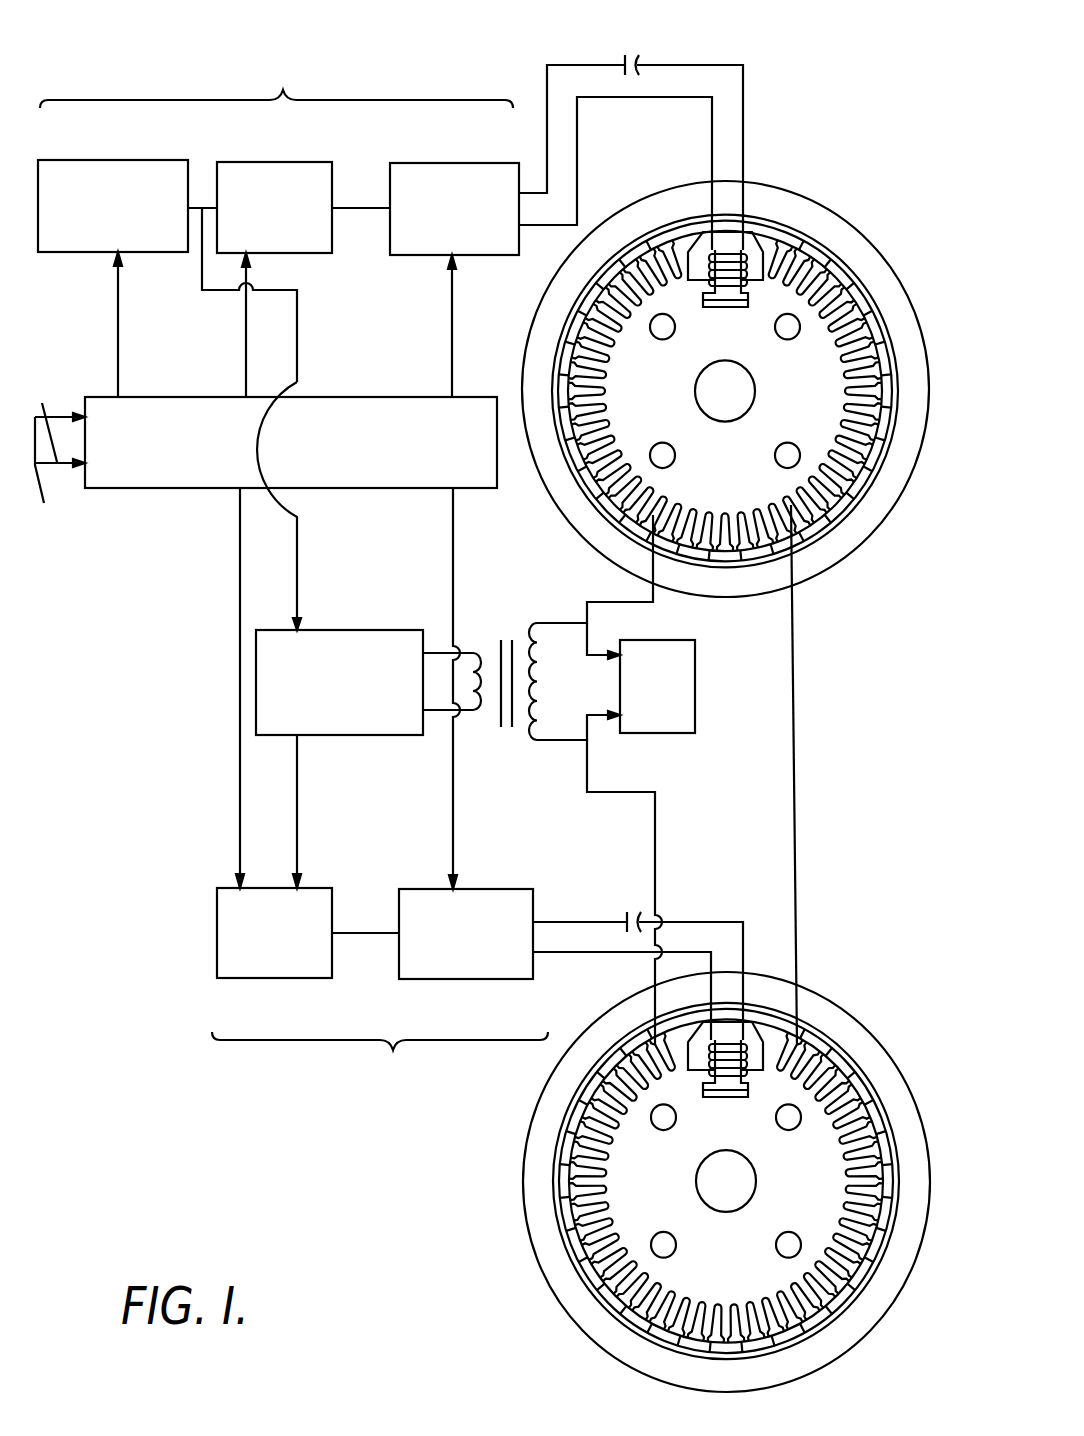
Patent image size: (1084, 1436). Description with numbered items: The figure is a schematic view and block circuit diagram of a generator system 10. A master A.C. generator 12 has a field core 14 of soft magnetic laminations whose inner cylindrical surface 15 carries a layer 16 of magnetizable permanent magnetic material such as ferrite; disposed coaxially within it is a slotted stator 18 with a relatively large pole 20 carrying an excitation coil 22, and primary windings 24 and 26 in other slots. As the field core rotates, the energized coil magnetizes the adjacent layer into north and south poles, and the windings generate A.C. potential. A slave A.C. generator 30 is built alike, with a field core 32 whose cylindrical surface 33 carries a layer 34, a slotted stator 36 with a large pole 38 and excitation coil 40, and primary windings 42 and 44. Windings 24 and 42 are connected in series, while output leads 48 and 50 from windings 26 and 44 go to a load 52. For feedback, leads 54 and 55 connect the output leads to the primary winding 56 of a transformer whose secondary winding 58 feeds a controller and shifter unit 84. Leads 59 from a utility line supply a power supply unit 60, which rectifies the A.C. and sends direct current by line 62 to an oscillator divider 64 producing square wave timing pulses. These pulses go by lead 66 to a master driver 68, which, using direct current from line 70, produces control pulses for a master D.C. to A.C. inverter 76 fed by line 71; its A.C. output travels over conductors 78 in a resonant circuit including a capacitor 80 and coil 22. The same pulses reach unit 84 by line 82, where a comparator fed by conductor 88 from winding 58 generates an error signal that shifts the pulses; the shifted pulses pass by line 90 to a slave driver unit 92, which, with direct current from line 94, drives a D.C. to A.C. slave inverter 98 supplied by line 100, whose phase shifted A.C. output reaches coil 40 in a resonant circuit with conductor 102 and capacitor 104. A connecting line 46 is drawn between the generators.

The generator system 10 is at (838, 781).
The master A.C. generator 12 is at (802, 195).
The field core 14 is at (850, 520).
The inner cylindrical surface 15 is at (830, 513).
The layer of magnetizable permanent magnetic material 16 is at (810, 530).
The stator 18 is at (680, 248).
The pole 20 is at (723, 300).
The excitation coil 22 is at (740, 257).
The primary winding 24 is at (877, 447).
The primary winding 26 is at (600, 470).
The slave A.C. generator 30 is at (523, 1160).
The field core 32 is at (812, 1017).
The cylindrical surface 33 is at (832, 1047).
The layer of magnetizable permanent magnetic material 34 is at (855, 1077).
The slotted stator 36 is at (835, 1255).
The pole 38 is at (700, 1092).
The excitation coil 40 is at (718, 1069).
The primary winding 42 is at (802, 1193).
The primary winding 44 is at (577, 1120).
The interconnecting line 46 is at (799, 912).
The output lead 48 is at (585, 658).
The output lead 50 is at (585, 725).
The load 52 is at (695, 703).
The lead 54 is at (570, 623).
The lead 55 is at (562, 742).
The primary winding of transformer 56 is at (533, 692).
The secondary winding 58 is at (485, 650).
The leads 59 is at (96, 457).
The power supply unit 60 is at (380, 397).
The line 62 is at (118, 340).
The oscillator divider 64 is at (87, 158).
The lead 66 is at (195, 202).
The master driver 68 is at (233, 158).
The line 70 is at (246, 333).
The line 71 is at (452, 352).
The master D.C. to A.C. inverter 76 is at (415, 162).
The conductors 78 is at (577, 118).
The capacitor 80 is at (641, 67).
The line 82 is at (297, 355).
The controller and shifter unit 84 is at (358, 630).
The conductor 88 is at (437, 650).
The line 90 is at (297, 837).
The slave driver unit 92 is at (293, 982).
The line 94 is at (240, 837).
The D.C. to A.C. slave inverter 98 is at (500, 982).
The line 100 is at (453, 837).
The conductor 102 is at (573, 950).
The capacitor 104 is at (625, 915).